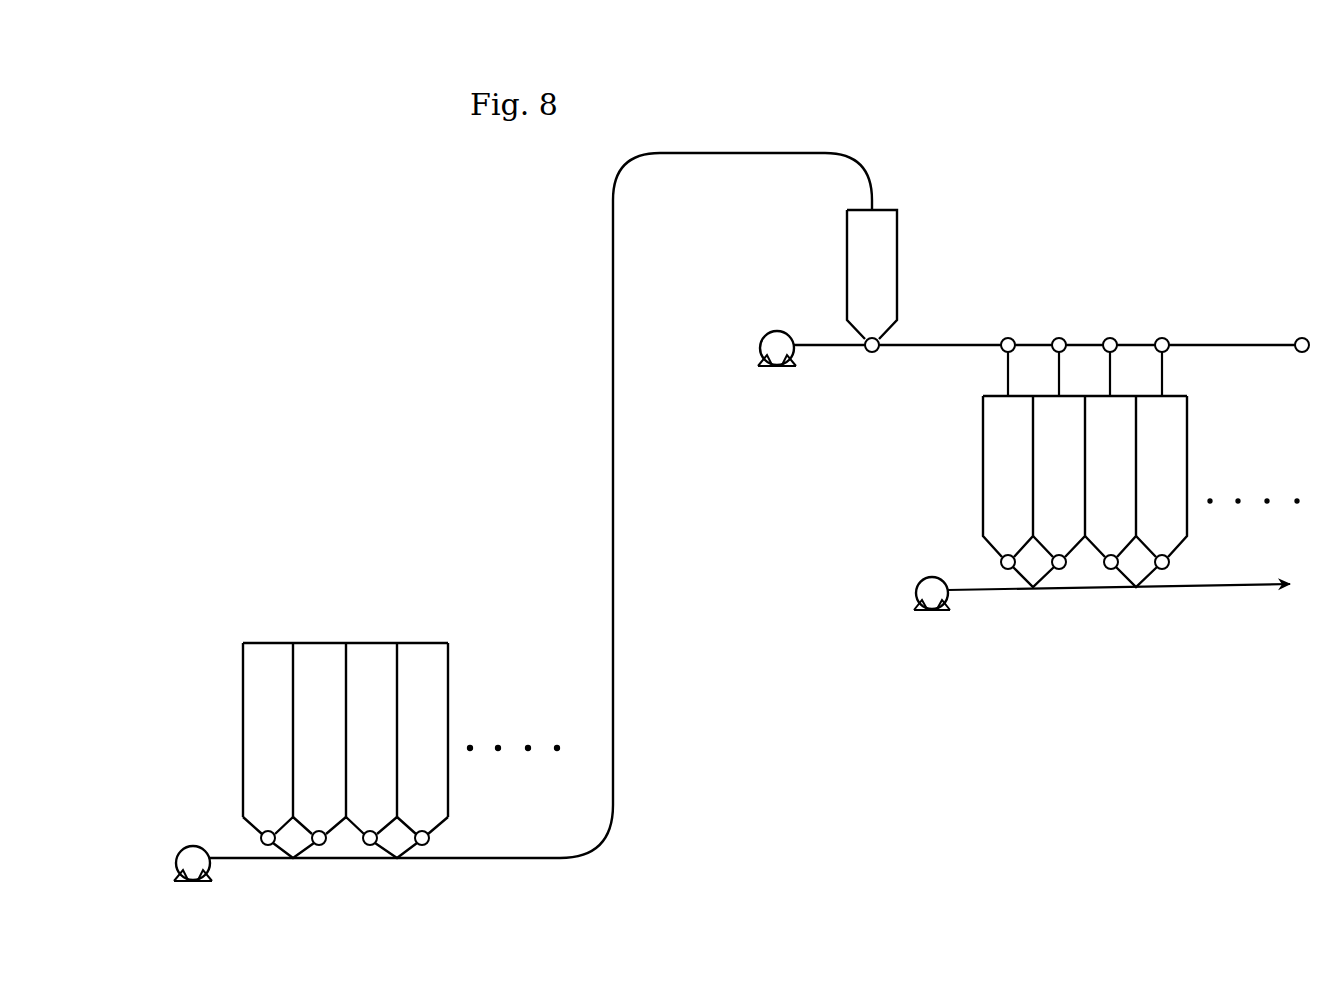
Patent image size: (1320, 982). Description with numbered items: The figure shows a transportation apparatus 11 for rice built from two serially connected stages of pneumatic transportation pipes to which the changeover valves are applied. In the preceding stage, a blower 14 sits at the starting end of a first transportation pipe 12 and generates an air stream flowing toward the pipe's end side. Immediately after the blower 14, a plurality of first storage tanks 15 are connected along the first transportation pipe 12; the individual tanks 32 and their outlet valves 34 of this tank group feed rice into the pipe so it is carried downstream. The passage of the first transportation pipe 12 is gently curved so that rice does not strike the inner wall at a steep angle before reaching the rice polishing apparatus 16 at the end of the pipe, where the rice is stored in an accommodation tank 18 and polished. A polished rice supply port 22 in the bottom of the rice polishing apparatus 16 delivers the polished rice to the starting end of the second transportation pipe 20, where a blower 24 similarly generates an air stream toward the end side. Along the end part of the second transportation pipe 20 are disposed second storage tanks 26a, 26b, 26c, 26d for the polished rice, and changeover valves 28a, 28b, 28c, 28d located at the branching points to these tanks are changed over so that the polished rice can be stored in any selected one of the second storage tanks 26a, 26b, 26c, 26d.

The transportation apparatus 11 is at (394, 252).
The first transportation pipe 12 is at (612, 431).
The blower 14 is at (193, 846).
The first storage tanks 15 is at (353, 724).
The rice polishing apparatus 16 is at (919, 292).
The accommodation tank 18 is at (890, 248).
The second transportation pipe 20 is at (953, 340).
The polished rice supply port 22 is at (872, 353).
The blower 24 is at (778, 331).
The second storage tank 26a is at (998, 460).
The second storage tank 26b is at (1055, 503).
The second storage tank 26c is at (1107, 432).
The second storage tank 26d is at (1163, 477).
The changeover valve 28a is at (1008, 337).
The changeover valve 28b is at (1059, 337).
The changeover valve 28c is at (1110, 337).
The changeover valve 28d is at (1162, 337).
The raw material tank 32 is at (268, 650).
The valve 34 is at (268, 829).